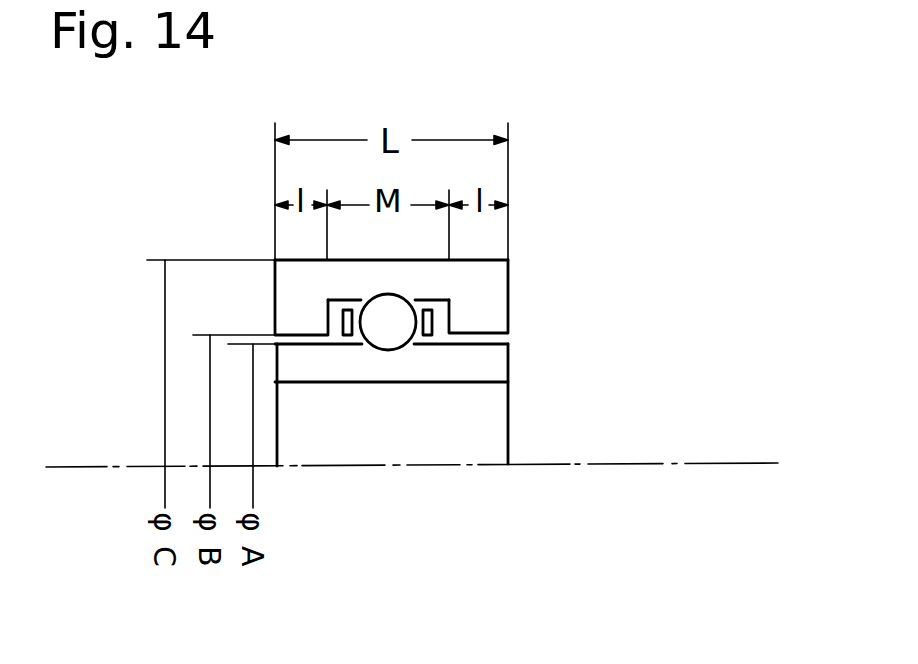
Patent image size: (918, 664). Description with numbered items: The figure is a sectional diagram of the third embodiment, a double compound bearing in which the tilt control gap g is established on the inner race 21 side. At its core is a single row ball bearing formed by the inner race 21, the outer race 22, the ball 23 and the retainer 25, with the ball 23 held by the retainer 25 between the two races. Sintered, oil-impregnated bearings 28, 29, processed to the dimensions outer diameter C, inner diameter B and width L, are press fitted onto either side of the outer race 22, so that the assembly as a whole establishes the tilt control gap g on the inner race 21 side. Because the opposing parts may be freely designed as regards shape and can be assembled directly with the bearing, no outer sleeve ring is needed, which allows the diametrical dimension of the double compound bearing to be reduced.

The inner race 21 is at (495, 377).
The outer race 22 is at (428, 276).
The ball 23 is at (390, 340).
The retainer 25 is at (432, 323).
The sintered, oil-impregnated bearing 28 is at (295, 305).
The sintered, oil-impregnated bearing 29 is at (483, 286).
The tilt control gap g is at (242, 338).